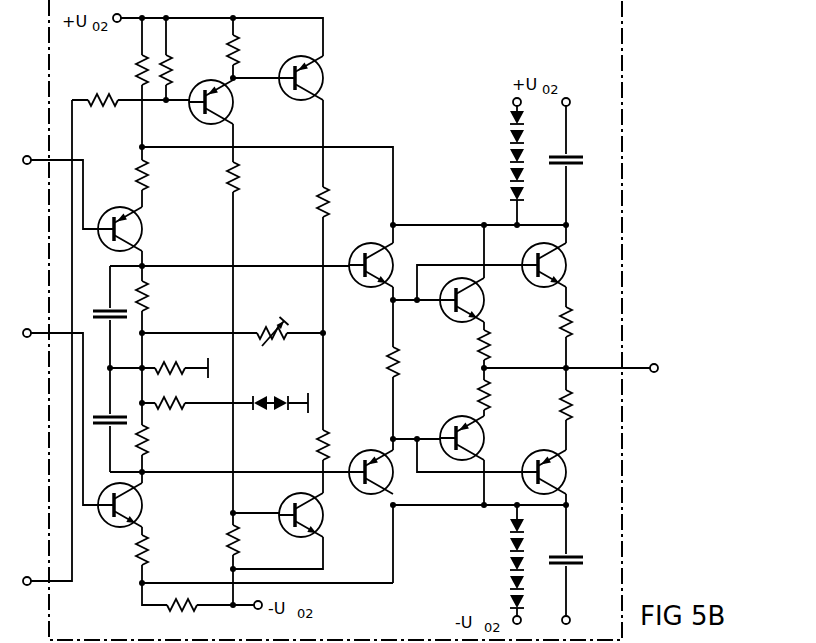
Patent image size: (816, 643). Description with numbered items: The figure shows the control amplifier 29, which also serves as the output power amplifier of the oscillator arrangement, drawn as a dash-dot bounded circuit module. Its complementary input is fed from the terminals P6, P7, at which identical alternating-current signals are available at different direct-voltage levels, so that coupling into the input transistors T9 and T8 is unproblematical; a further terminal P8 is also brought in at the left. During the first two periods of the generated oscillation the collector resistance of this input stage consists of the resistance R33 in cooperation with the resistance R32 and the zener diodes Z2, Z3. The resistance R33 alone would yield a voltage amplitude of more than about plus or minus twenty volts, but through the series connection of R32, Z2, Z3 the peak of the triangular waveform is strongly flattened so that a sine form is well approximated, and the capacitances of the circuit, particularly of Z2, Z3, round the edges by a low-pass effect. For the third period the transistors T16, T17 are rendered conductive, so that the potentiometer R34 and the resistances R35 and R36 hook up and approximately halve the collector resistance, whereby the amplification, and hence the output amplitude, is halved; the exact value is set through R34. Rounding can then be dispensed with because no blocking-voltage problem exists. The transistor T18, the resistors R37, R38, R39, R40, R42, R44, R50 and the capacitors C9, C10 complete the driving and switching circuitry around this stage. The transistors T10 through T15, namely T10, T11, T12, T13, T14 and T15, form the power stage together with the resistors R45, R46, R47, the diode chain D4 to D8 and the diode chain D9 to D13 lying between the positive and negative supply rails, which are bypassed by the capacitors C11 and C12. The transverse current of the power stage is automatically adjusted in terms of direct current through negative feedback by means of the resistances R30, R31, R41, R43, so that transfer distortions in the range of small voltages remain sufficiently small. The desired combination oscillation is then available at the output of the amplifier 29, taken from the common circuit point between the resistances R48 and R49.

The control amplifier 29 is at (438, 57).
The terminal P6 is at (27, 323).
The terminal P7 is at (27, 150).
The terminal P8 is at (31, 570).
The resistance R30 is at (149, 298).
The resistance R31 is at (148, 448).
The resistance R32 is at (174, 412).
The resistance R33 is at (158, 364).
The potentiometer R34 is at (273, 346).
The resistance R35 is at (136, 74).
The resistance R36 is at (104, 115).
The resistor R37 is at (172, 64).
The resistor R38 is at (239, 47).
The resistor R39 is at (240, 179).
The resistor R40 is at (149, 550).
The resistance R41 is at (167, 610).
The resistor R42 is at (240, 545).
The resistance R43 is at (317, 209).
The resistor R44 is at (316, 449).
The resistor R45 is at (386, 367).
The resistor R46 is at (491, 341).
The resistor R47 is at (491, 392).
The resistance R48 is at (573, 325).
The resistance R49 is at (573, 409).
The resistor R50 is at (149, 178).
The capacitor C9 is at (106, 308).
The capacitor C10 is at (116, 418).
The capacitor C11 is at (573, 166).
The capacitor C12 is at (573, 556).
The zener diode Z2 is at (261, 411).
The zener diode Z3 is at (280, 411).
The diode D4 is at (483, 155).
The diode D8 is at (512, 155).
The diode D9 is at (482, 563).
The diode D13 is at (512, 566).
The transistor T8 is at (143, 231).
The transistor T9 is at (143, 508).
The transistor T10 is at (364, 245).
The transistor T11 is at (364, 453).
The transistor T12 is at (449, 318).
The transistor T13 is at (567, 265).
The transistor T14 is at (462, 410).
The transistor T15 is at (567, 472).
The transistor T16 is at (294, 100).
The transistor T17 is at (324, 518).
The transistor T18 is at (194, 118).